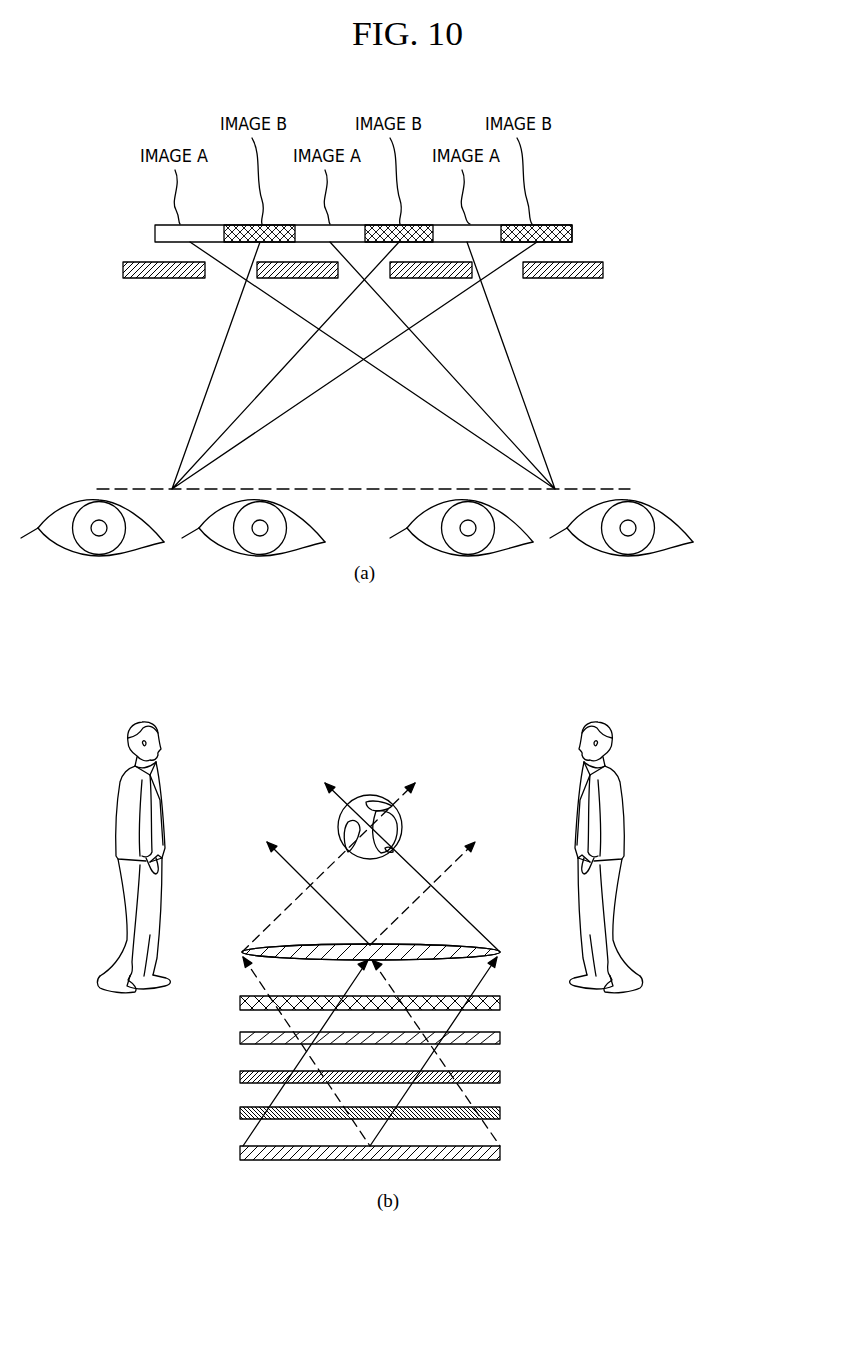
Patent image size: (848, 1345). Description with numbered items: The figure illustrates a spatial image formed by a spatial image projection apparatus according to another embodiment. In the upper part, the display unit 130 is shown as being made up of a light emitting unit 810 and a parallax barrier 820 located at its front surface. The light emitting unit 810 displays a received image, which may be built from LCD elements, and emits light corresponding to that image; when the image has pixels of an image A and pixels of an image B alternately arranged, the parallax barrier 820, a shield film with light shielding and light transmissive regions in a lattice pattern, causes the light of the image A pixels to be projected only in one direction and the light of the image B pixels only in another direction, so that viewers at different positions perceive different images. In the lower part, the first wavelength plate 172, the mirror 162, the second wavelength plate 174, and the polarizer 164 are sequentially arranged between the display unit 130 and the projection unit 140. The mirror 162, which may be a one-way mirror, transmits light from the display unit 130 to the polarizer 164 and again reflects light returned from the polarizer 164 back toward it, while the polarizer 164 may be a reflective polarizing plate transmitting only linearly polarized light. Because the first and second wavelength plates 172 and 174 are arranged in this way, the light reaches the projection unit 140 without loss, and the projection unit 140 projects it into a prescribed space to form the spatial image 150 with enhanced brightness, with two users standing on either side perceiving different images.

The light emitting unit 810 is at (572, 232).
The parallax barrier 820 is at (603, 270).
The spatial image 150 is at (389, 800).
The projection unit 140 is at (430, 944).
The polarizer 164 is at (502, 1003).
The second wavelength plate 174 is at (502, 1039).
The mirror 162 is at (502, 1077).
The first wavelength plate 172 is at (502, 1113).
The display unit 130 is at (502, 1152).